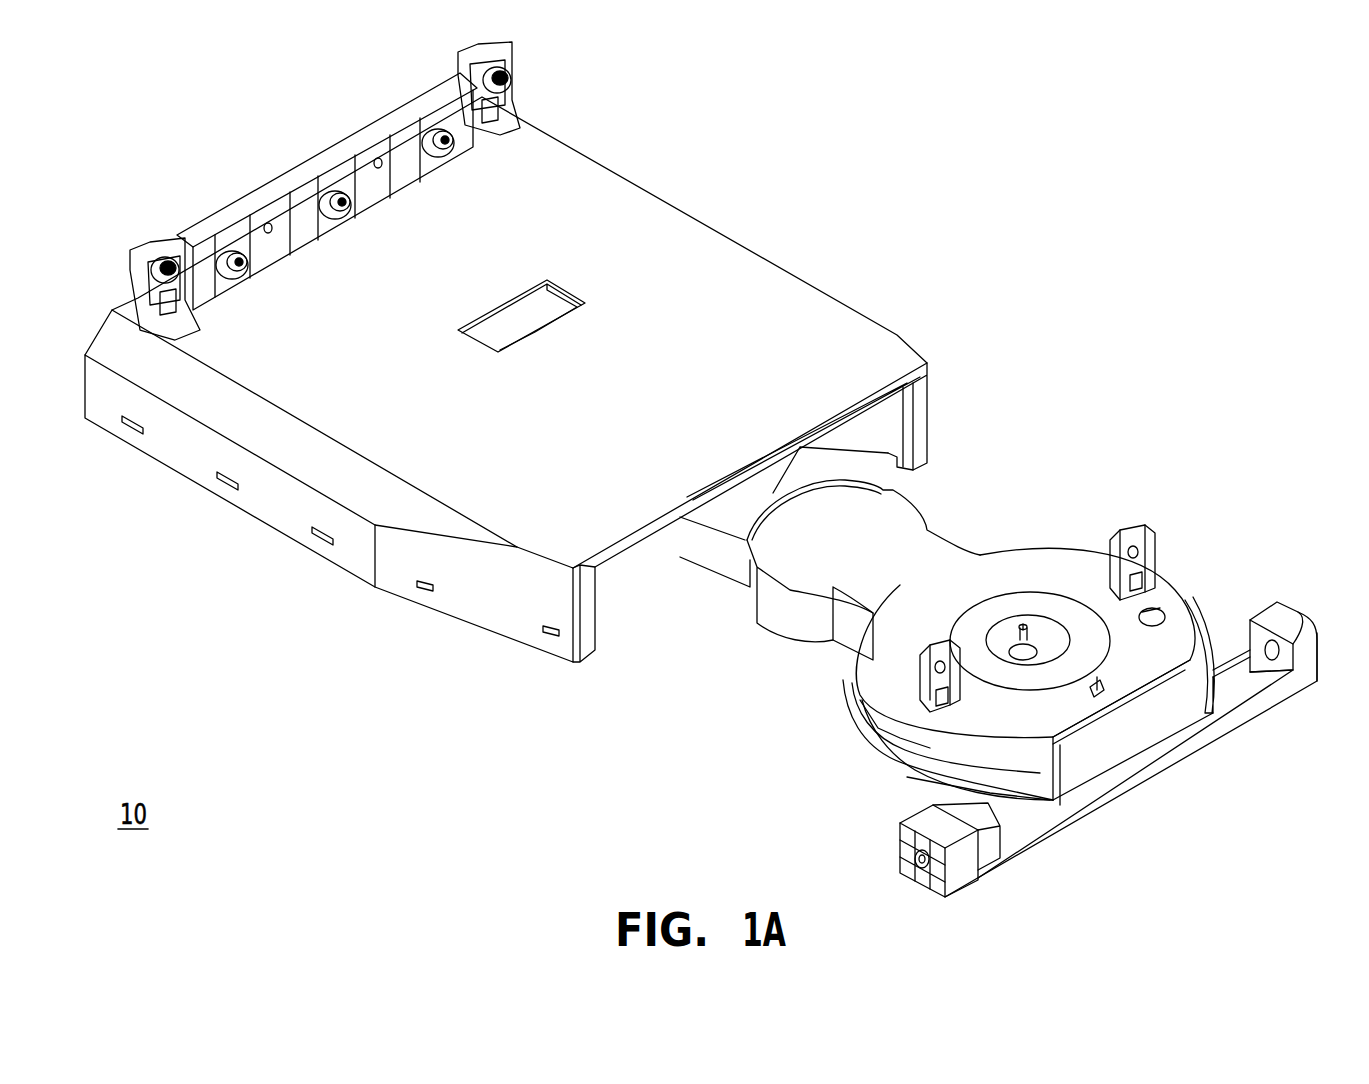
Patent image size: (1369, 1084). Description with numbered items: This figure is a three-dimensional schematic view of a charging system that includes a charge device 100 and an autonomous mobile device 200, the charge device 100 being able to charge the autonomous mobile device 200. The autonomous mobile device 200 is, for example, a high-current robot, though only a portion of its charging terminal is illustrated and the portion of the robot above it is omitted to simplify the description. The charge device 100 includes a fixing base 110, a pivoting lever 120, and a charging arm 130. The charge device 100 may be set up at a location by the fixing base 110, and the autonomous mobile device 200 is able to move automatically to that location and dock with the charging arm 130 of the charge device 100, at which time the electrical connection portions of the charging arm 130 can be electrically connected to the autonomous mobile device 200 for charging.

The charge device 100 is at (1143, 436).
The fixing base 110 is at (873, 778).
The pivoting lever 120 is at (1017, 572).
The charging arm 130 is at (738, 508).
The autonomous mobile device 200 is at (813, 131).